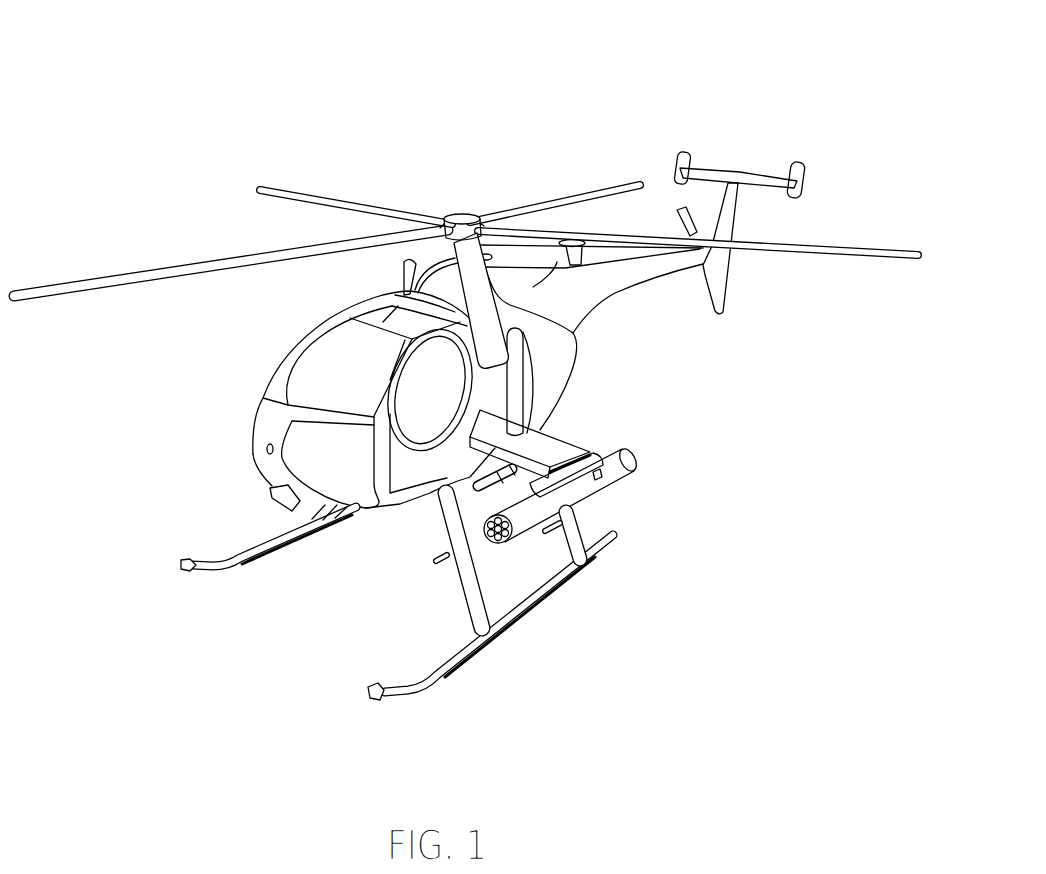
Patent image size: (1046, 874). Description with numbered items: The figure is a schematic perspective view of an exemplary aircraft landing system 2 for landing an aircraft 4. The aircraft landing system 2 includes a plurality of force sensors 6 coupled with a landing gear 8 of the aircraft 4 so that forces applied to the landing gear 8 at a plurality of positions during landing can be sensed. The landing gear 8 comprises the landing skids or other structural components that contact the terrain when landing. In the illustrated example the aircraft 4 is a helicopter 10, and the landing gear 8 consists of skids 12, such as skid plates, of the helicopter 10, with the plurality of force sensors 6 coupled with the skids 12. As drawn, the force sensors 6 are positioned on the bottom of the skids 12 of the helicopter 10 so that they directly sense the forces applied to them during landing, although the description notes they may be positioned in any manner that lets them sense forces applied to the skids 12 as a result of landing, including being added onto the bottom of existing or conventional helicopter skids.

The aircraft landing system 2 is at (110, 83).
The aircraft 4 is at (308, 150).
The helicopter 10 is at (462, 227).
The force sensors 6 is at (278, 565).
The landing gear 8 is at (170, 559).
The skids 12 is at (354, 689).